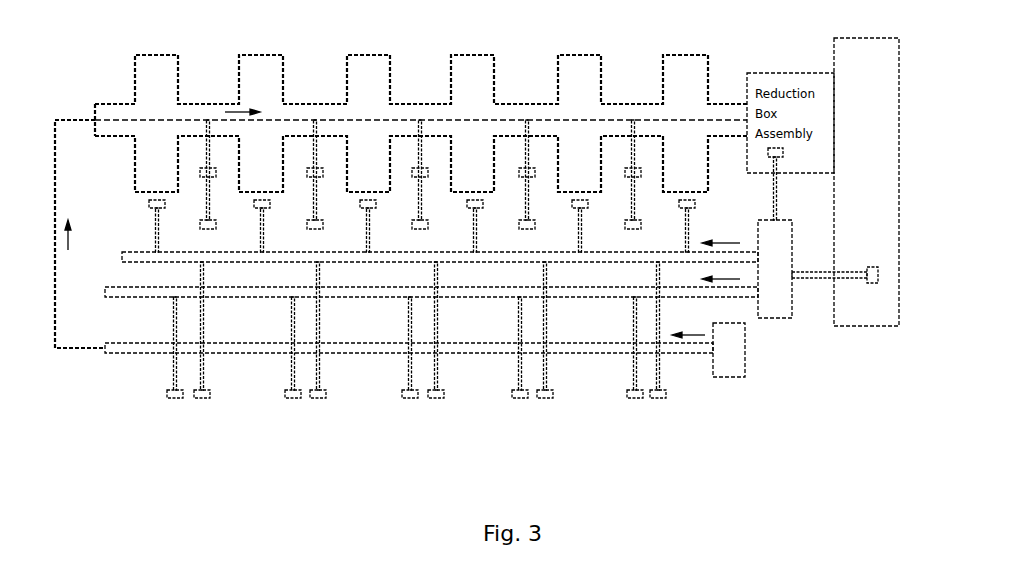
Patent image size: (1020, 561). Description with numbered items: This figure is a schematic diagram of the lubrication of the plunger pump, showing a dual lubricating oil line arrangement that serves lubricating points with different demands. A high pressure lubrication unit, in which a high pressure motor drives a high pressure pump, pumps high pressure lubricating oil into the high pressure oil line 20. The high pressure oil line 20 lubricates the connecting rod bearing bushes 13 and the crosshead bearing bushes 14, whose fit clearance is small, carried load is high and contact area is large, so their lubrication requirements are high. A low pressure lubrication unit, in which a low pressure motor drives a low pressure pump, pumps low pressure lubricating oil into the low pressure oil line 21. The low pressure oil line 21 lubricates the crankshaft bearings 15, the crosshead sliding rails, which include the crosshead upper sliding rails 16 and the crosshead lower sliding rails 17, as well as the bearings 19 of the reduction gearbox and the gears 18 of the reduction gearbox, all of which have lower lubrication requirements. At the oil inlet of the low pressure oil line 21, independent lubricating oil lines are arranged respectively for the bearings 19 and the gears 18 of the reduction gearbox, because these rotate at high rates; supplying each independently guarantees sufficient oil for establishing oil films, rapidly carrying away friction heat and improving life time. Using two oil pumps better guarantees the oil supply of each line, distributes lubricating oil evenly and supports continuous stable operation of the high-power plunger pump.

The connecting rod bearing bushes 13 is at (203, 167).
The crosshead bearing bushes 14 is at (203, 215).
The crankshaft bearings 15 is at (152, 190).
The crosshead upper sliding rails 16 is at (200, 398).
The crosshead lower sliding rails 17 is at (173, 398).
The reduction gearbox gear pair 18 is at (783, 148).
The bearing of reduction gearbox 19 is at (880, 268).
The high pressure oil line 20 is at (725, 357).
The low pressure oil line 21 is at (777, 300).